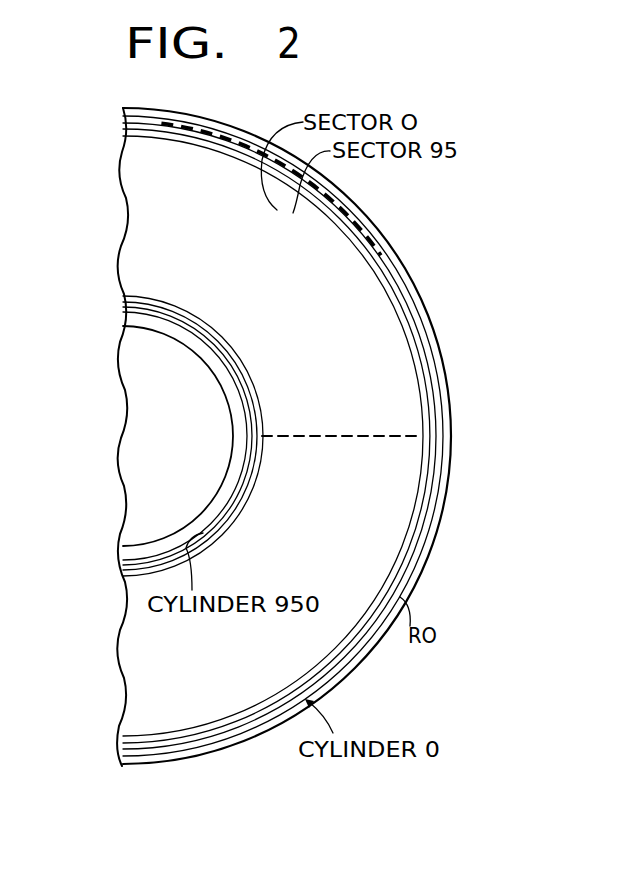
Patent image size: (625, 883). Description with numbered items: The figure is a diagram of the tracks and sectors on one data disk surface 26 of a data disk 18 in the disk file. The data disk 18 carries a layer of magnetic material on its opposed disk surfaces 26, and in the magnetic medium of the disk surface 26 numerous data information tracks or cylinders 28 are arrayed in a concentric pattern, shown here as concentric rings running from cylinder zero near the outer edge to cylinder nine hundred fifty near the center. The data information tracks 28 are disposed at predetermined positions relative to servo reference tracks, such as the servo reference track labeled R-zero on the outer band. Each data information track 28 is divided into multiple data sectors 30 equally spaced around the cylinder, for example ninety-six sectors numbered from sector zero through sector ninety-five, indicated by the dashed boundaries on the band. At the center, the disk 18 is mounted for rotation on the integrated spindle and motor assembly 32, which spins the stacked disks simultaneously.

The data disk 18 is at (207, 766).
The disk surface 26 is at (246, 693).
The data information track 28 is at (243, 506).
The data sector 30 is at (226, 140).
The integrated spindle and motor assembly 32 is at (182, 451).